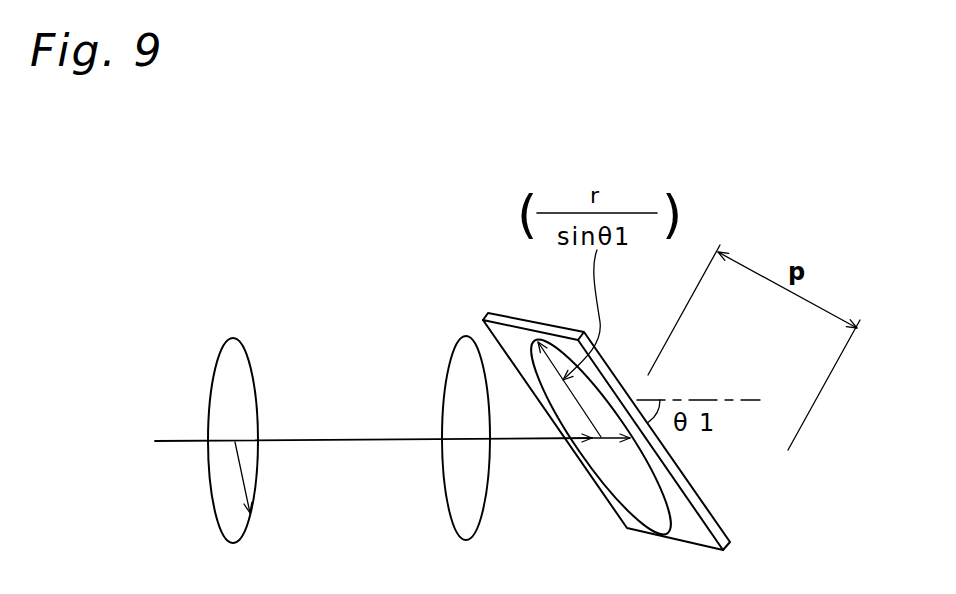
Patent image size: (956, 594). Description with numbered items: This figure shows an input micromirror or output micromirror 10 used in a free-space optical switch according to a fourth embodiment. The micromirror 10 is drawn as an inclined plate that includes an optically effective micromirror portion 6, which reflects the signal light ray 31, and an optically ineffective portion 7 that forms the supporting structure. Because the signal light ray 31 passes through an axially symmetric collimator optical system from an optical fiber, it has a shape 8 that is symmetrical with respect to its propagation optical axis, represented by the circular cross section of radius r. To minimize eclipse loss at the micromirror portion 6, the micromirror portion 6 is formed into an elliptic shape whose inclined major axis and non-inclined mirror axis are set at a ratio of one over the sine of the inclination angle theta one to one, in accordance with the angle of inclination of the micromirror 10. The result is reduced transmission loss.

The signal light ray 31 is at (178, 441).
The shape of the signal light ray 8 is at (257, 397).
The micromirror portion 6 is at (601, 437).
The optically ineffective portion 7 is at (603, 435).
The input micromirror 10 is at (712, 488).